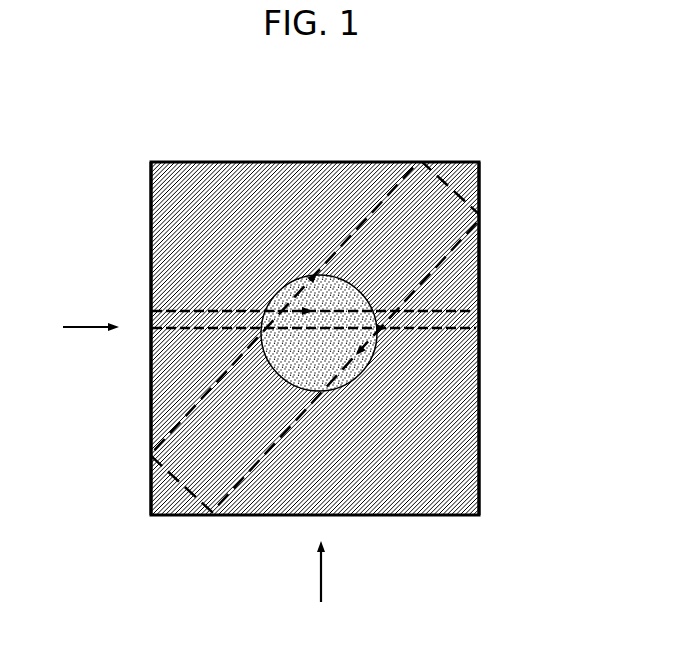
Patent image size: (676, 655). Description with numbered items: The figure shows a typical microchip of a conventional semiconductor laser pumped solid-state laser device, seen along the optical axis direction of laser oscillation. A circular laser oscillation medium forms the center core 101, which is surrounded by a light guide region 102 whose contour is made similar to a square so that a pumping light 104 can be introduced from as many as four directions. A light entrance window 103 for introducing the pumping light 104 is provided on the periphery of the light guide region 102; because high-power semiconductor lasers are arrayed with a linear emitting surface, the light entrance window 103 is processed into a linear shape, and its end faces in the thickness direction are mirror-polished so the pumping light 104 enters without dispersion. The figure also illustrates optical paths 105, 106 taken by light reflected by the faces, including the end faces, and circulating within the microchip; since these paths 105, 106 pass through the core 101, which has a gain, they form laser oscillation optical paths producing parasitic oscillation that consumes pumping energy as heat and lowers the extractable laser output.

The center core 101 is at (358, 370).
The light guide region 102 is at (247, 183).
The light entrance window 103 is at (151, 302).
The pumping light 104 is at (85, 329).
The optical path 105 is at (442, 328).
The optical path 106 is at (481, 264).